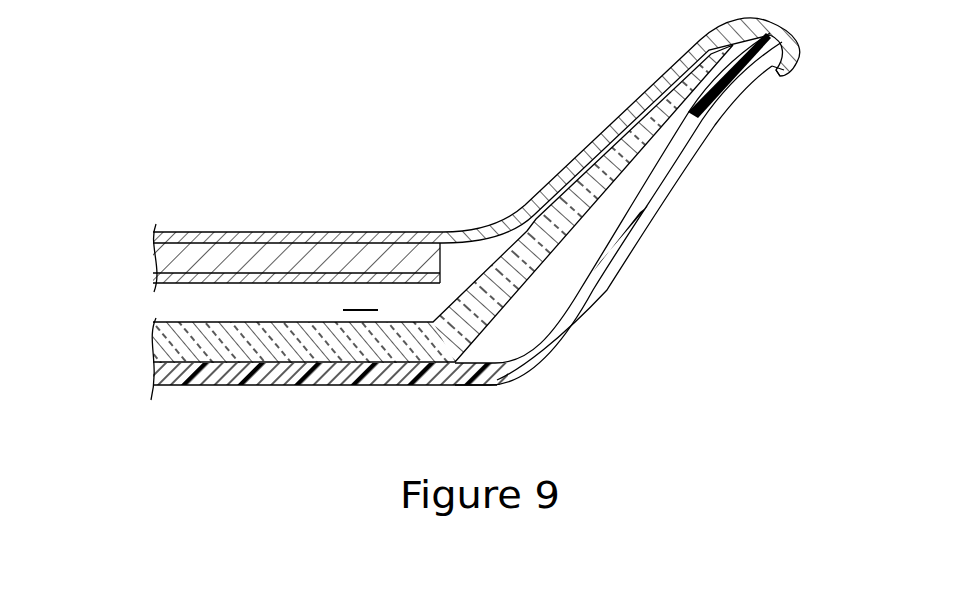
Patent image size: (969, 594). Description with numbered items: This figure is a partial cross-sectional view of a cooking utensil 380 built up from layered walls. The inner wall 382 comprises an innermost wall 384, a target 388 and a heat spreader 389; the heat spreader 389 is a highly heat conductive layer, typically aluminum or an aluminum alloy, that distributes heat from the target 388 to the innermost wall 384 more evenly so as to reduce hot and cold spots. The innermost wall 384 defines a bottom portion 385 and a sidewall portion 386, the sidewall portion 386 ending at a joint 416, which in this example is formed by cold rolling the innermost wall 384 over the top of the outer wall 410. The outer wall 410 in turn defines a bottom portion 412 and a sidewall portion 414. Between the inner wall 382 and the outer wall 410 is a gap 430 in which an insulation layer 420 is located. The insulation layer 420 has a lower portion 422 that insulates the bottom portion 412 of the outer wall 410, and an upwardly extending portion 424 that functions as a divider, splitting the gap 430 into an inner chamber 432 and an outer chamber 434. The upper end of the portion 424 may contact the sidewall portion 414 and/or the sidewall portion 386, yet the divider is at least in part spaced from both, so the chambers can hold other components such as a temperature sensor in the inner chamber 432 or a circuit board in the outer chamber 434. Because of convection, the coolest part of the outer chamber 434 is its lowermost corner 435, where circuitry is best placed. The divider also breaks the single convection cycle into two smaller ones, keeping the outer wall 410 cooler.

The cooking utensil 380 is at (438, 162).
The inner wall 382 is at (272, 210).
The innermost wall 384 is at (432, 212).
The bottom portion 385 is at (313, 231).
The sidewall portion 386 is at (686, 62).
The target 388 is at (190, 301).
The heat spreader 389 is at (173, 230).
The outer wall 410 is at (660, 242).
The bottom portion 412 is at (413, 378).
The sidewall portion 414 is at (683, 135).
The joint 416 is at (793, 77).
The insulation layer 420 is at (513, 292).
The lower portion 422 is at (307, 350).
The upwardly extending portion 424 is at (657, 192).
The gap 430 is at (448, 237).
The inner chamber 432 is at (360, 298).
The outer chamber 434 is at (567, 272).
The lowermost corner 435 is at (515, 340).